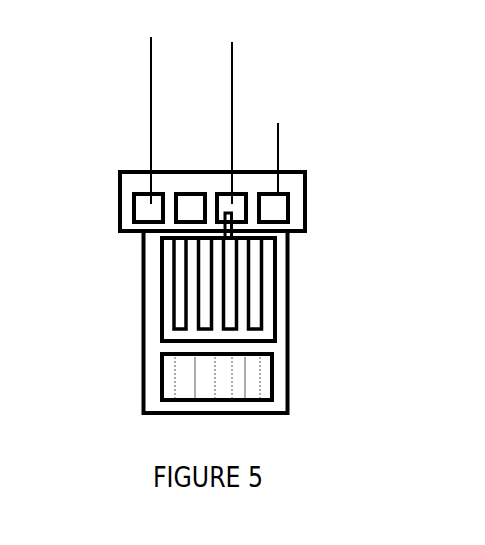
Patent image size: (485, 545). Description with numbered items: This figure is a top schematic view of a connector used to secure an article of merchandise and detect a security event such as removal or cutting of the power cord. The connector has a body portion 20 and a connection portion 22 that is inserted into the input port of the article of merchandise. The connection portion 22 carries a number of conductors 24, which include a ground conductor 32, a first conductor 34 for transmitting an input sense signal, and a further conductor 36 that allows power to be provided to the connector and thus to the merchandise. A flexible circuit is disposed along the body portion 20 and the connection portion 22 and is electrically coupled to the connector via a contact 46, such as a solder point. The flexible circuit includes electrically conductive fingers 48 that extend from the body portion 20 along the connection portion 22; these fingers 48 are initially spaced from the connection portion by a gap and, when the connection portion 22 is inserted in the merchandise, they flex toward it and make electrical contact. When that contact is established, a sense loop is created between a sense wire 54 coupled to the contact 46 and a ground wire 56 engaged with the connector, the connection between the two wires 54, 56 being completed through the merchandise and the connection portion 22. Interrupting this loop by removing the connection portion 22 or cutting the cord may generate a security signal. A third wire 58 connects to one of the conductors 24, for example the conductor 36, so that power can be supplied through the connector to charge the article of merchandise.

The body portion 20 is at (119, 183).
The connection portion 22 is at (289, 353).
The conductors 24 is at (160, 382).
The ground conductor 32 is at (289, 212).
The first conductor 34 is at (188, 192).
The conductor 36 is at (145, 192).
The contact 46 is at (233, 220).
The electrically conductive fingers 48 is at (188, 285).
The sense wire 54 is at (233, 75).
The ground wire 56 is at (279, 155).
The third wire 58 is at (150, 68).